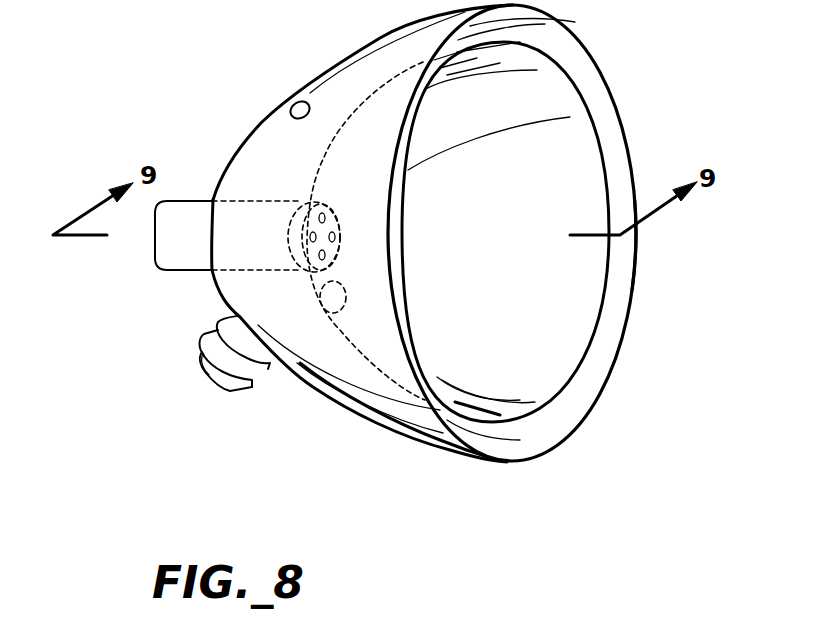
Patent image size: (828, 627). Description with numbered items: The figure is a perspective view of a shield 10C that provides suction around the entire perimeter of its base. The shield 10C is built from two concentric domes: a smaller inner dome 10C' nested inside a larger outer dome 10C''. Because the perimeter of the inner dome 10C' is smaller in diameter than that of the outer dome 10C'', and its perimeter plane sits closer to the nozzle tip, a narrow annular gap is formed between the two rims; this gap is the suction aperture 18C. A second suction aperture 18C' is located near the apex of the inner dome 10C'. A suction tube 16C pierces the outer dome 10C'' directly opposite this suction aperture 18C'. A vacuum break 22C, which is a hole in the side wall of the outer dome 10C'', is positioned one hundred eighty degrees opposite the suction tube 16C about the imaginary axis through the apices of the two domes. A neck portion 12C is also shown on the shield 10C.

The shield 10C is at (362, 231).
The inner dome 10C' is at (544, 232).
The outer dome 10C'' is at (681, 247).
The neck 12C is at (196, 272).
The suction tube 16C is at (240, 393).
The suction aperture 18C is at (545, 233).
The suction aperture 18C' is at (361, 231).
The vacuum break 22C is at (295, 101).